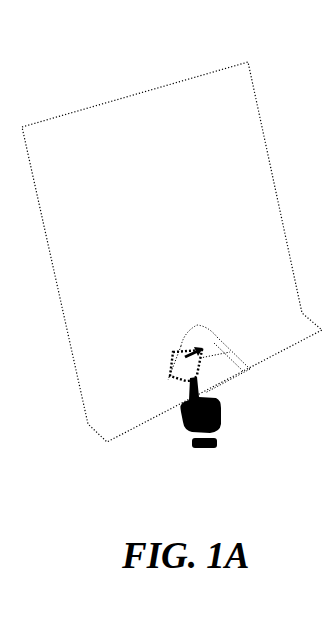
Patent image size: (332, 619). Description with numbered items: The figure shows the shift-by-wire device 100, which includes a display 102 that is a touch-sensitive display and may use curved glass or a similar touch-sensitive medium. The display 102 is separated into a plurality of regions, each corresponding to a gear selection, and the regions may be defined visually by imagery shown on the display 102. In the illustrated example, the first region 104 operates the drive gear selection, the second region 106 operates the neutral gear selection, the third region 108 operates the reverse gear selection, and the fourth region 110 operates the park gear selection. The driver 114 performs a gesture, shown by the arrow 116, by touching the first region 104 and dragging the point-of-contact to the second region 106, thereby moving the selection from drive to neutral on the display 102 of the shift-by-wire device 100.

The shift-by-wire device 100 is at (208, 60).
The display 102 is at (213, 333).
The first region 104 is at (175, 380).
The second region 106 is at (193, 328).
The third region 108 is at (238, 353).
The fourth region 110 is at (250, 372).
The driver 114 is at (219, 425).
The swipe gesture arrow 116 is at (185, 392).